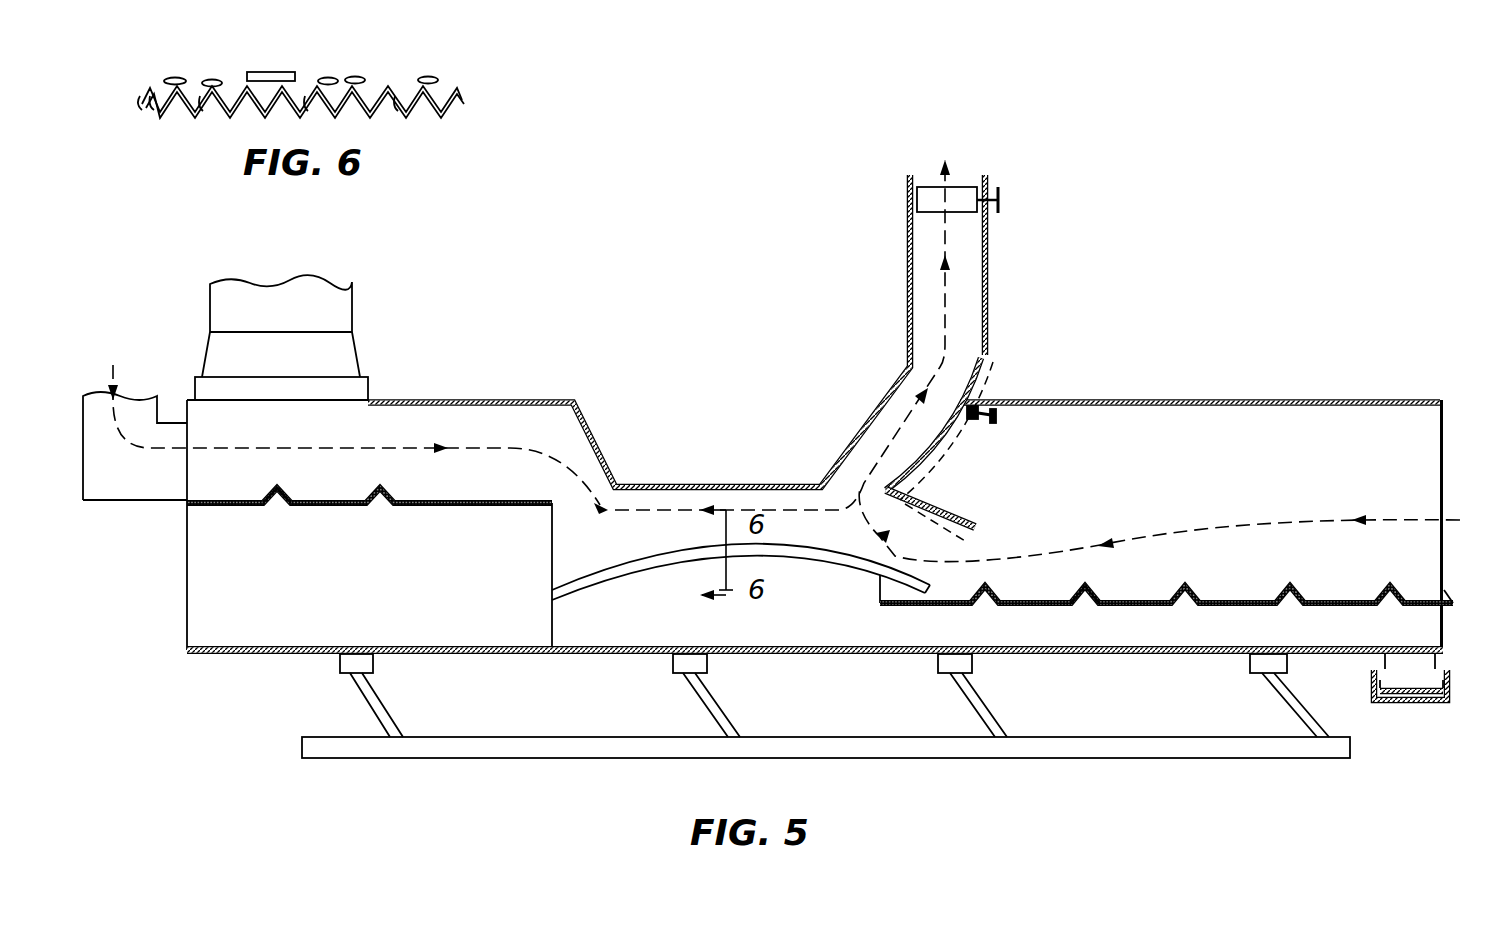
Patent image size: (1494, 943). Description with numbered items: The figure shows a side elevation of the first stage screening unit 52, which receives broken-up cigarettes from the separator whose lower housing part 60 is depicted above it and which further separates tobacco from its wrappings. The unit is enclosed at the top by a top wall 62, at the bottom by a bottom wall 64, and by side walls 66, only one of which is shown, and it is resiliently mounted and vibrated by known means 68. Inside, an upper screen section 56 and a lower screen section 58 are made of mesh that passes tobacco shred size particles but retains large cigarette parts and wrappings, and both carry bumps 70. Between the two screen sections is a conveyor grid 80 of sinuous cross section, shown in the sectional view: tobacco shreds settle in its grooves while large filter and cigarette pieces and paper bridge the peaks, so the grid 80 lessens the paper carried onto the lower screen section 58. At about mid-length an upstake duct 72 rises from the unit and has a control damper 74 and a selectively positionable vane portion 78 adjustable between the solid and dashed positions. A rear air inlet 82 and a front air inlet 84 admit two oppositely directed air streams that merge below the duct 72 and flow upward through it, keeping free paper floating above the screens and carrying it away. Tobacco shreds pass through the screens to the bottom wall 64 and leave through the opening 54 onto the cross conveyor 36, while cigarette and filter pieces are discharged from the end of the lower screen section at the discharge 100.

In FIG. 5, the cross conveyor 36 is at (1448, 703).
In FIG. 5, the first stage screening unit 52 is at (750, 328).
In FIG. 5, the opening 54 is at (1392, 660).
In FIG. 5, the upper screen section 56 is at (451, 478).
In FIG. 5, the lower screen section 58 is at (1253, 578).
In FIG. 5, the lower housing part 60 is at (357, 353).
In FIG. 5, the top wall 62 is at (1248, 375).
In FIG. 5, the bottom wall 64 is at (1120, 655).
In FIG. 5, the side walls 66 is at (1338, 452).
In FIG. 5, the resilient mounting and vibrating means 68 is at (955, 683).
In FIG. 5, the bumps 70 is at (278, 488).
In FIG. 5, the upstake duct 72 is at (988, 268).
In FIG. 5, the control damper 74 is at (957, 186).
In FIG. 5, the vane portion 78 is at (935, 448).
In FIG. 6, the conveyor grid 80 is at (456, 98).
In FIG. 5, the conveyor grid 80 is at (842, 558).
In FIG. 5, the rear air inlet 82 is at (112, 490).
In FIG. 5, the air inlet 84 is at (1421, 420).
In FIG. 5, the discharge 100 is at (1453, 600).